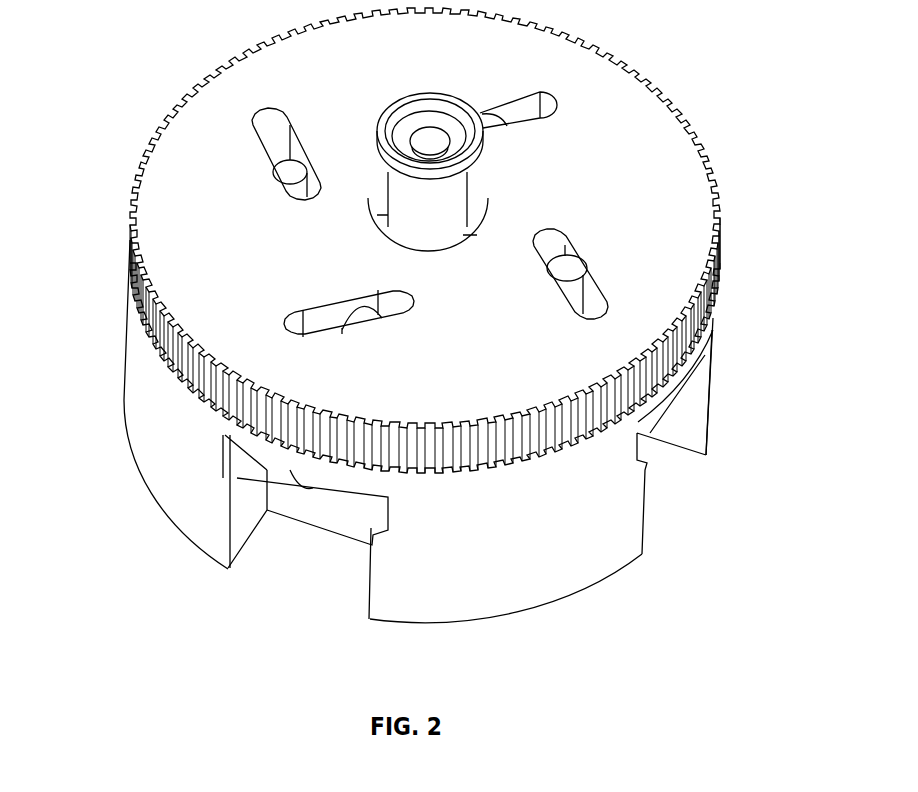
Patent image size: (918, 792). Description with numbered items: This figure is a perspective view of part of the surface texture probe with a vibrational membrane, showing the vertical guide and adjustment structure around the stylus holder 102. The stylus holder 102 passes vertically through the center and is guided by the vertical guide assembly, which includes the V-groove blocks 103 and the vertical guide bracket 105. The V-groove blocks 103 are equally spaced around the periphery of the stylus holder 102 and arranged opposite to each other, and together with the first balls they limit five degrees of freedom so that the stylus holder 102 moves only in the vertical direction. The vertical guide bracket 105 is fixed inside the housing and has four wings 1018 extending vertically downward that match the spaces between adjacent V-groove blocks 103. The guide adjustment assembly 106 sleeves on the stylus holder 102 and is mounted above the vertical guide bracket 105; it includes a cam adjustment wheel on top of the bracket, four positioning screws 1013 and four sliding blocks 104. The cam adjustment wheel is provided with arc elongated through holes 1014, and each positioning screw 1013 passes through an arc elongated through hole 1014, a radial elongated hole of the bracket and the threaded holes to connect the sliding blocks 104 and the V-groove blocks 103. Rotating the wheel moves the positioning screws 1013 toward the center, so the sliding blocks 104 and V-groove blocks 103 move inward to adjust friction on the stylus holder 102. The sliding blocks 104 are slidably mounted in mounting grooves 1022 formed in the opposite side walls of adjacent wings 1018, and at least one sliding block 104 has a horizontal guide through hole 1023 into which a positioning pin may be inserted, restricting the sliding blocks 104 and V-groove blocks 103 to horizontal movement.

The stylus holder 102 is at (440, 218).
The V-groove blocks 103 is at (342, 522).
The sliding blocks 104 is at (267, 469).
The vertical guide bracket 105 is at (655, 408).
The guide adjustment assembly 106 is at (660, 261).
The positioning screws 1013 is at (272, 176).
The arc elongated through holes 1014 is at (300, 311).
The wings 1018 is at (575, 576).
The mounting grooves 1022 is at (305, 495).
The horizontal guide through hole 1023 is at (312, 487).